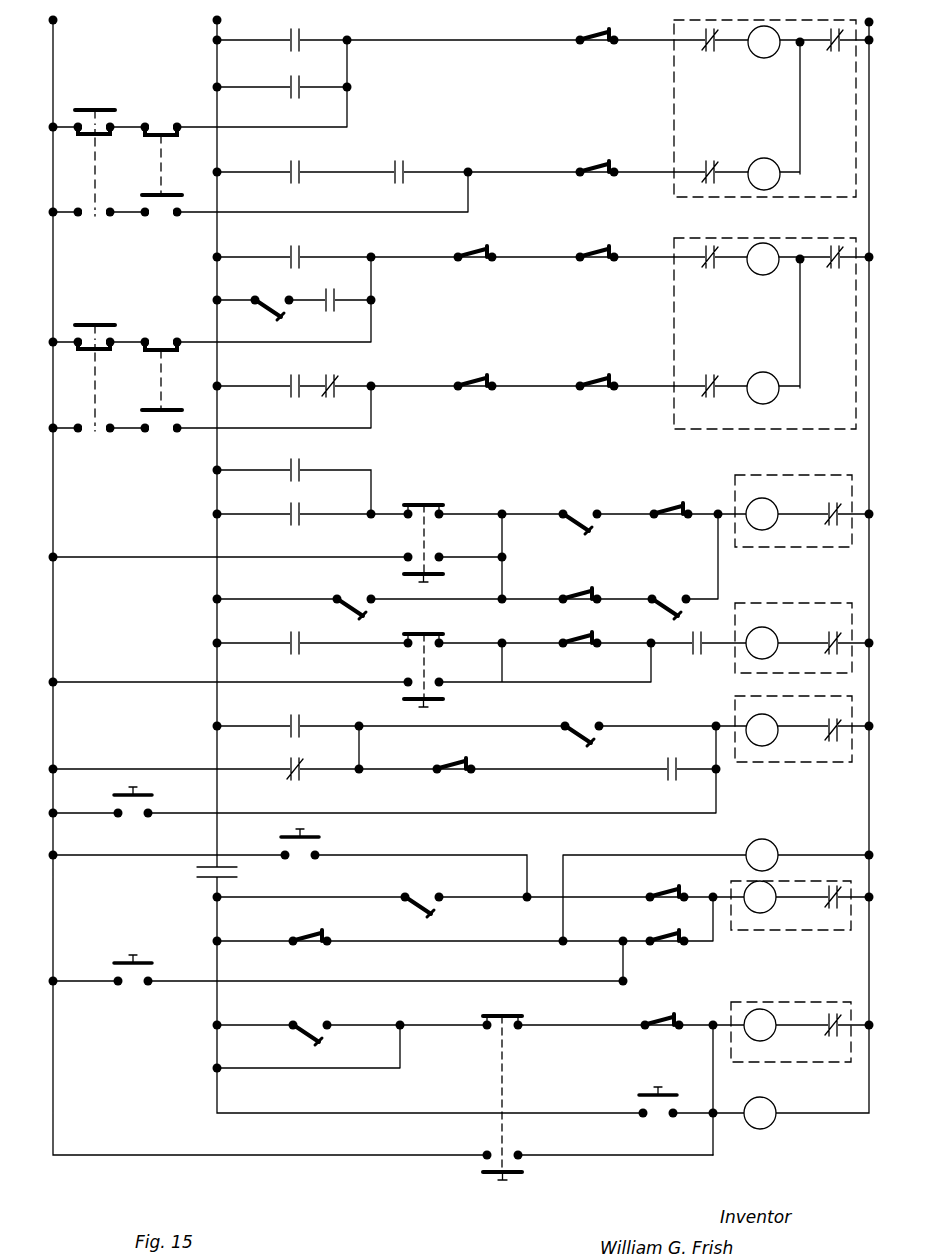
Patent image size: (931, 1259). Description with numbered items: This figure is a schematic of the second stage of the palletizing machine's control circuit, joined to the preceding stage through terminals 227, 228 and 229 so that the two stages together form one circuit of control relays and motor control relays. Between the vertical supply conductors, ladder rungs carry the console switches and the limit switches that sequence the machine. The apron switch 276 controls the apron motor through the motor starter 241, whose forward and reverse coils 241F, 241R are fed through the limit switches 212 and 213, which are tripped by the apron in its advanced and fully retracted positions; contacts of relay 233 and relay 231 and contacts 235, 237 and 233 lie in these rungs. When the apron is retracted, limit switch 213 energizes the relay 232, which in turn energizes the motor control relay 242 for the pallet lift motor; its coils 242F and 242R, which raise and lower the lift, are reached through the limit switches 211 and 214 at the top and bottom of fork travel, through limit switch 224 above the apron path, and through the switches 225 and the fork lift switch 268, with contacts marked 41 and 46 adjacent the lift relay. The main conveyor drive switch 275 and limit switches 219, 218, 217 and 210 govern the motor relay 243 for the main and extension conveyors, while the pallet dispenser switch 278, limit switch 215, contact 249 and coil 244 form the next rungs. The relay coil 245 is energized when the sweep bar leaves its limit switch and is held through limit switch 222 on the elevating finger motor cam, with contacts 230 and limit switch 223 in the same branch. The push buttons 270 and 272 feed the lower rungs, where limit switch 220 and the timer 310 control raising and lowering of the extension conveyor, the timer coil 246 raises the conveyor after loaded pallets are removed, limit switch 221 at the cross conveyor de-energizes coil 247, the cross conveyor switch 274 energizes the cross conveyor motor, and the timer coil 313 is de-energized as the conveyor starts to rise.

The terminal 227 is at (80, 24).
The terminal 228 is at (186, 24).
The terminal 229 is at (894, 28).
The apron switch 276 is at (105, 99).
The fork lift switch 268 is at (144, 312).
The relay contact 235 is at (299, 36).
The relay 233 is at (288, 96).
The relay 231 is at (299, 166).
The motor control relay 242 is at (399, 159).
The motor relay forward coil 242F is at (767, 274).
The motor relay reverse coil 242R is at (769, 402).
The motor starter 241 is at (650, 105).
The motor starter forward coil 241F is at (764, 57).
The motor starter reverse coil 241R is at (764, 162).
The limit switch 212 is at (593, 48).
The limit switch 213 is at (596, 171).
The relay contact 237 is at (299, 253).
The limit switch 224 is at (473, 254).
The limit switch 211 is at (605, 254).
The carriage 41 is at (621, 264).
The carriage 46 is at (621, 390).
The relay 232 is at (290, 376).
The switch 225 is at (475, 383).
The limit switch 214 is at (593, 386).
The motor relay 243 is at (288, 524).
The main conveyor drive switch 275 is at (414, 528).
The pallet dispenser switch 278 is at (414, 653).
The limit switch 219 is at (578, 509).
The limit switch 218 is at (678, 508).
The limit switch 217 is at (575, 598).
The limit switch 210 is at (680, 580).
The limit switch 215 is at (578, 645).
The relay contact 249 is at (694, 652).
The relay coil 244 is at (762, 600).
The relay coil 245 is at (760, 721).
The relay contact 230 is at (295, 723).
The limit switch 223 is at (593, 742).
The limit switch 222 is at (448, 772).
The extension conveyor switch 270 is at (134, 813).
The push button switch 272 is at (135, 984).
The timer 310 is at (762, 852).
The limit switch 220 is at (661, 896).
The timer coil 246 is at (762, 911).
The limit switch 221 is at (654, 1022).
The cross conveyor switch 274 is at (508, 1040).
The coil 247 is at (760, 1040).
The timer coil 313 is at (760, 1113).